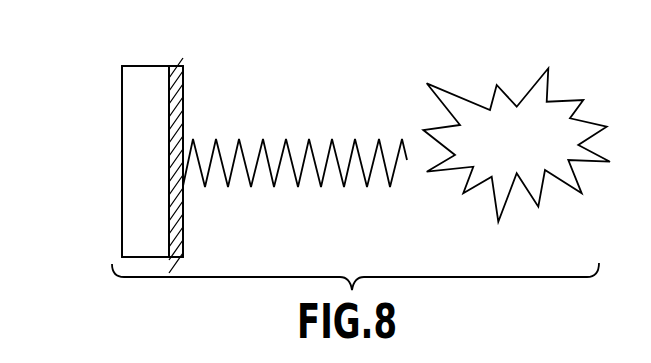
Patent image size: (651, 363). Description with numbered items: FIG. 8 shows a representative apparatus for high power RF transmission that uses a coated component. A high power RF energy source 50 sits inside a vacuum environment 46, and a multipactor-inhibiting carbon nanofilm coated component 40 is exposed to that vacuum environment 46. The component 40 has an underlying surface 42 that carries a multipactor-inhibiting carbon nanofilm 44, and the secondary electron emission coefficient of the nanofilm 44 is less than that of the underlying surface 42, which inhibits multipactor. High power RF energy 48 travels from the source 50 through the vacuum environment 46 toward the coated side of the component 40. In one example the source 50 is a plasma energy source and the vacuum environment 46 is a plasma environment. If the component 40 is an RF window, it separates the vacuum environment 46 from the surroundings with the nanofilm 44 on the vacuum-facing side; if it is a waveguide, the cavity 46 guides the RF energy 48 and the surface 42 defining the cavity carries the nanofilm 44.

The multipactor-inhibiting carbon nanofilm coated component 40 is at (106, 58).
The underlying surface 42 is at (120, 140).
The multipactor-inhibiting carbon nanofilm 44 is at (183, 77).
The vacuum environment 46 is at (234, 103).
The high power RF energy 48 is at (263, 139).
The high power RF energy source 50 is at (500, 122).